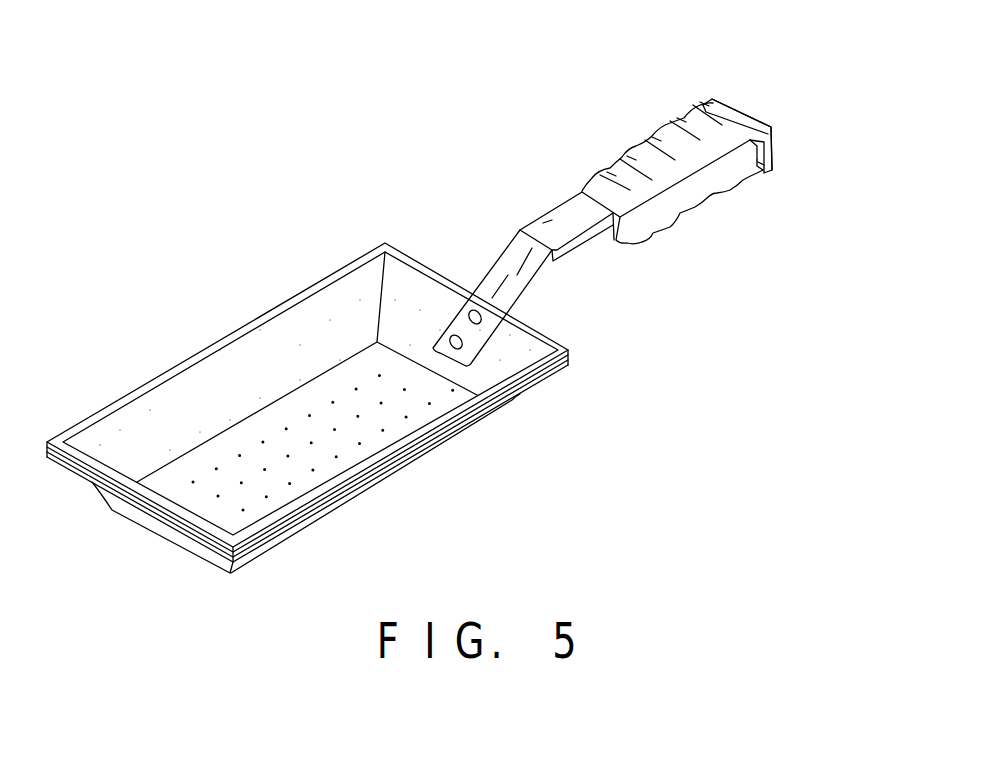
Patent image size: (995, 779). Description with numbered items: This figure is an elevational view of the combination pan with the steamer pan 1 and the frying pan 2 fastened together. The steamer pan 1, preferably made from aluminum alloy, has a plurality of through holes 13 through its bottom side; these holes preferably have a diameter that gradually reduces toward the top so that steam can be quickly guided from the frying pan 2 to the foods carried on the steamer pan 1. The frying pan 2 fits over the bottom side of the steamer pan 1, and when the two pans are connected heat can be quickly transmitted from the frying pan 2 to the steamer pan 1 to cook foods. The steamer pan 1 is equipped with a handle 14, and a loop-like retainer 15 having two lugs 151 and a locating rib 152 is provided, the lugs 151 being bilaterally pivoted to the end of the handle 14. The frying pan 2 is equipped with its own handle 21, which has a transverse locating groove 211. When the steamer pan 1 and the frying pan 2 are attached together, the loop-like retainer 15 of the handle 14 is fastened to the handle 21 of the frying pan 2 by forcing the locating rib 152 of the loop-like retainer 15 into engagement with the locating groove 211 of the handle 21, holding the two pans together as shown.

The steamer pan 1 is at (182, 357).
The through holes 13 is at (310, 420).
The frying pan 2 is at (285, 532).
The handle 14 is at (633, 152).
The loop-like retainer 15 is at (748, 110).
The lugs 151 is at (710, 100).
The locating rib 152 is at (767, 175).
The handle 21 is at (677, 228).
The locating groove 211 is at (758, 170).